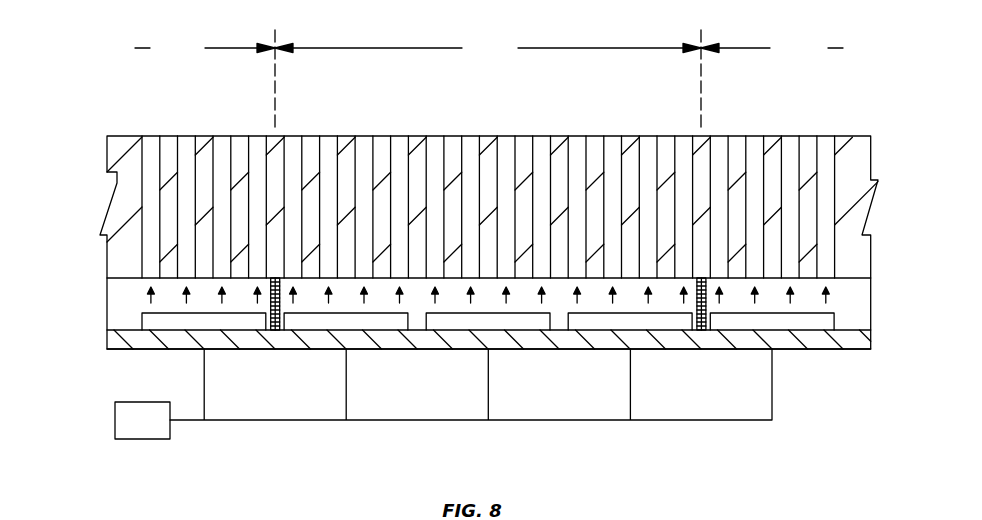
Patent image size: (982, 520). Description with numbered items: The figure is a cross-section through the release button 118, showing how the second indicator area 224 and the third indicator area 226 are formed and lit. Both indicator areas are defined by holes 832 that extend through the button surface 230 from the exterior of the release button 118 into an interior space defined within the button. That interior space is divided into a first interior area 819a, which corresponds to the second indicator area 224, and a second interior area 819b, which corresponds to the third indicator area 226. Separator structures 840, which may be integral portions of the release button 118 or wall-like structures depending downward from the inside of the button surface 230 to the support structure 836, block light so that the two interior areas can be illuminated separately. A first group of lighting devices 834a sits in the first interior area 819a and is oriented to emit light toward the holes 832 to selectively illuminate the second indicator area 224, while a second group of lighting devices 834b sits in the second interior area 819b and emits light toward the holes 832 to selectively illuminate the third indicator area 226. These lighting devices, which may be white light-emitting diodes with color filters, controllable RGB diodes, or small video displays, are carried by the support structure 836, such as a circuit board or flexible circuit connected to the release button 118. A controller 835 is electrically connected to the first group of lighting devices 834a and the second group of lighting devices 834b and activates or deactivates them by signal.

The release button 118 is at (860, 146).
The second indicator area 224 is at (489, 79).
The third indicator area 226 is at (488, 48).
The button surface 230 is at (130, 135).
The first interior area 819a is at (860, 305).
The second interior area 819b is at (418, 296).
The holes 832 is at (612, 136).
The first group of lighting devices 834a is at (170, 327).
The second group of lighting devices 834b is at (822, 327).
The controller 835 is at (443, 394).
The support structure 836 is at (865, 350).
The separator structures 840 is at (700, 331).